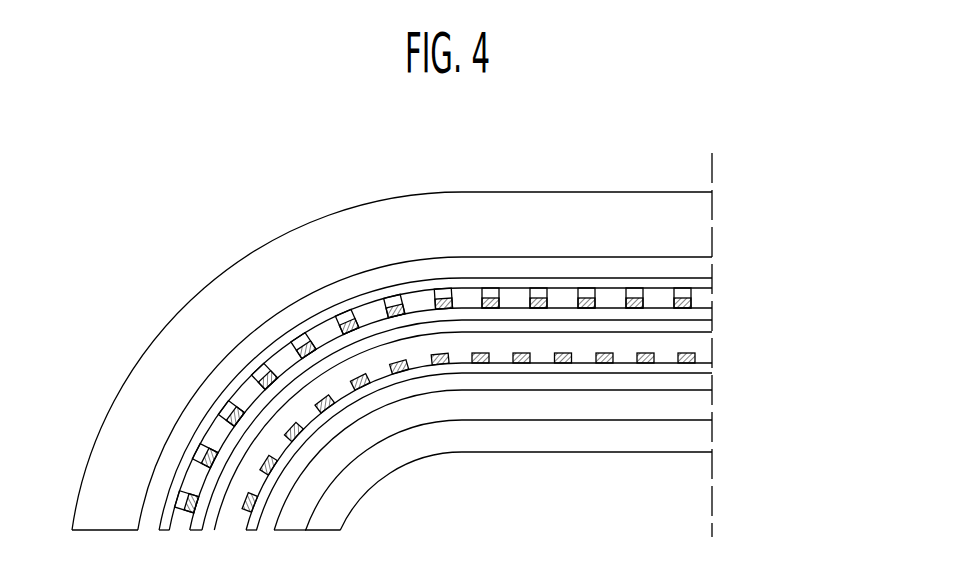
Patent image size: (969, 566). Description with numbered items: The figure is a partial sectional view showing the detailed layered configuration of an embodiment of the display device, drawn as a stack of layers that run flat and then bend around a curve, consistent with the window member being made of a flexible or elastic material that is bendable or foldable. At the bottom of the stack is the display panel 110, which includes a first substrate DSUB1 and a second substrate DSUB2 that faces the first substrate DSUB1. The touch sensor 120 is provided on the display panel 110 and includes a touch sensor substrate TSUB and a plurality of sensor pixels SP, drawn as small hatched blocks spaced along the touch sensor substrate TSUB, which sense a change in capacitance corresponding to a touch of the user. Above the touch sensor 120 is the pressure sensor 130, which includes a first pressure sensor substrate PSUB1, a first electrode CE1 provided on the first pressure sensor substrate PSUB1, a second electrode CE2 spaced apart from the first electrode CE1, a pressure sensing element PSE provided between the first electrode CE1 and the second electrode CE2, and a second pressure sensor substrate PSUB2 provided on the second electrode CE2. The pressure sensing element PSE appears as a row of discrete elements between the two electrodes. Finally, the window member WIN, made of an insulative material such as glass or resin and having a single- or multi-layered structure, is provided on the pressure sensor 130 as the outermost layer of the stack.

The window member WIN is at (707, 209).
The pressure sensor 130 is at (493, 382).
The second pressure sensor substrate PSUB2 is at (692, 284).
The second electrode CE2 is at (692, 292).
The pressure sensing element PSE is at (690, 304).
The first electrode CE1 is at (706, 315).
The first pressure sensor substrate PSUB1 is at (498, 427).
The touch sensor 120 is at (536, 441).
The sensor pixels SP is at (697, 358).
The touch sensor substrate TSUB is at (703, 372).
The display panel 110 is at (553, 460).
The second substrate DSUB2 is at (707, 410).
The first substrate DSUB1 is at (707, 440).